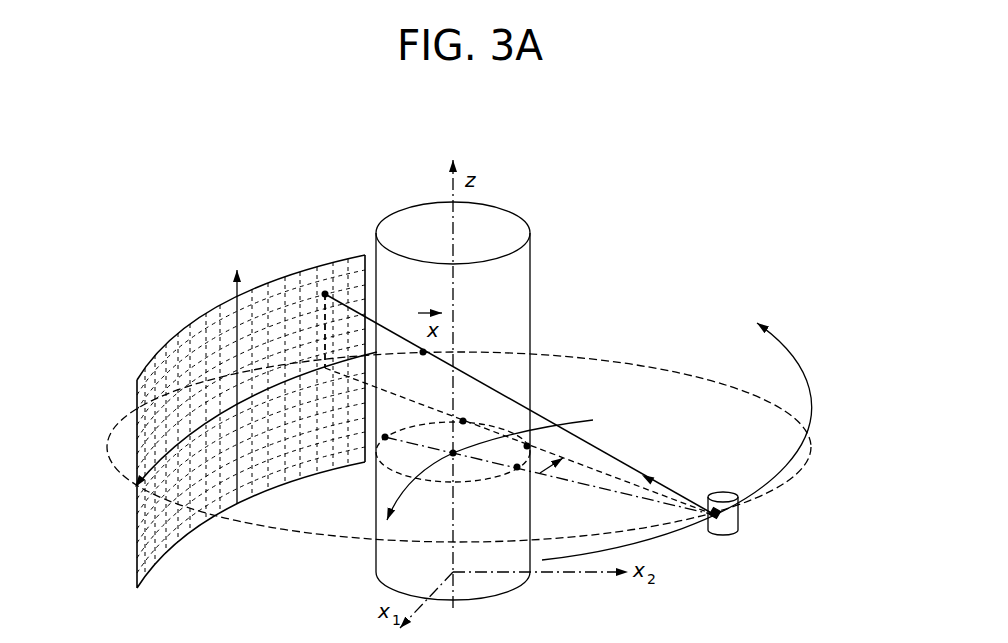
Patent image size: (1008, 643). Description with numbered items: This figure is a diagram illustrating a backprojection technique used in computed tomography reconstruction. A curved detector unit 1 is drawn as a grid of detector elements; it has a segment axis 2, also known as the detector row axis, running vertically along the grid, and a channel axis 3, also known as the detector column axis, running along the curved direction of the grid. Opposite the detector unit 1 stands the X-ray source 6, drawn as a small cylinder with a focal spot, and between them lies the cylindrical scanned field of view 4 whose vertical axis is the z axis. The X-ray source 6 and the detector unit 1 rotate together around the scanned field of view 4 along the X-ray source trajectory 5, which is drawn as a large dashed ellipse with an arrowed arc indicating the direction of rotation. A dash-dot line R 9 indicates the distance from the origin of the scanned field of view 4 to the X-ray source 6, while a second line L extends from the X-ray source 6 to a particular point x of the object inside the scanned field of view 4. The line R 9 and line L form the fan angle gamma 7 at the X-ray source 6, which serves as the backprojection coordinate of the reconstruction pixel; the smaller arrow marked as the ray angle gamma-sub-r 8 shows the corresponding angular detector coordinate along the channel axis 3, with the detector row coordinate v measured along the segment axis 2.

The detector unit 1 is at (213, 421).
The segment axis 2 is at (249, 362).
The channel axis 3 is at (208, 447).
The scanned field of view 4 is at (510, 278).
The X-ray source trajectory 5 is at (498, 408).
The X-ray source 6 is at (753, 537).
The angle γ 7 is at (490, 470).
The angular detector coordinate γr 8 is at (559, 475).
The line R 9 is at (550, 476).